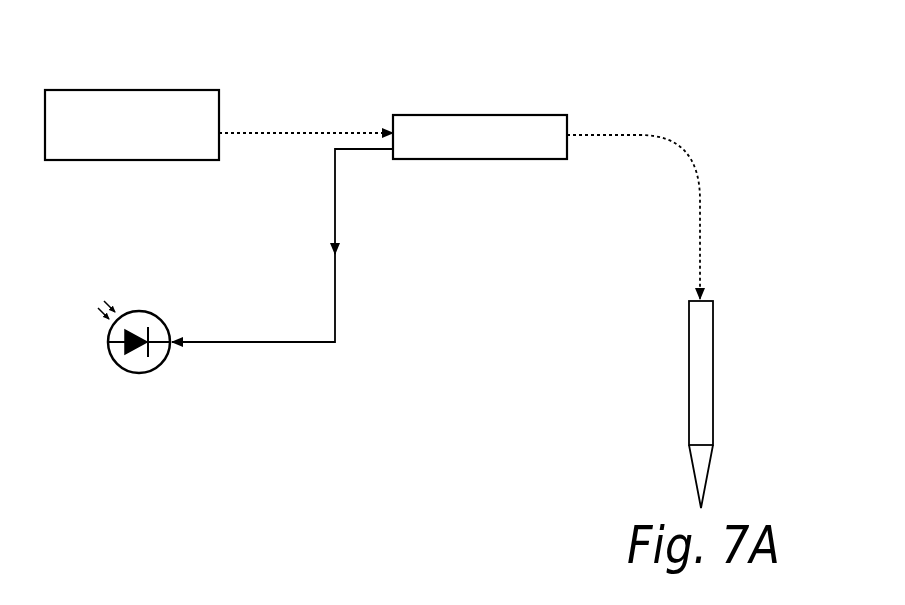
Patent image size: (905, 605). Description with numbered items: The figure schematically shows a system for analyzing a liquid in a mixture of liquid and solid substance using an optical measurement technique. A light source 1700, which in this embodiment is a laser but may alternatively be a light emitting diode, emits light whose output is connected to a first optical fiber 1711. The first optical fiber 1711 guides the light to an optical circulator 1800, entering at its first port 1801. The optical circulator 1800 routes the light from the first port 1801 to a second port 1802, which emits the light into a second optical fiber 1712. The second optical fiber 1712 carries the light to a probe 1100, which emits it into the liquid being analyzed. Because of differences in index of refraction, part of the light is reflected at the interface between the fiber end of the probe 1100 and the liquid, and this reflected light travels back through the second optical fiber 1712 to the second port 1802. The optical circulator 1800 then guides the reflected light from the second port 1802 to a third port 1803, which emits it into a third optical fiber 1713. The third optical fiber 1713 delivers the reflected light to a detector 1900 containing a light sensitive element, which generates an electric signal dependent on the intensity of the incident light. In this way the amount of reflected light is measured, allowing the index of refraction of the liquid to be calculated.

The light source 1700 is at (100, 108).
The first optical fiber 1711 is at (287, 132).
The optical circulator 1800 is at (488, 130).
The first port 1801 is at (392, 128).
The second port 1802 is at (572, 128).
The third port 1803 is at (392, 157).
The second optical fiber 1712 is at (677, 152).
The probe 1100 is at (707, 398).
The third optical fiber 1713 is at (313, 343).
The detector 1900 is at (137, 372).